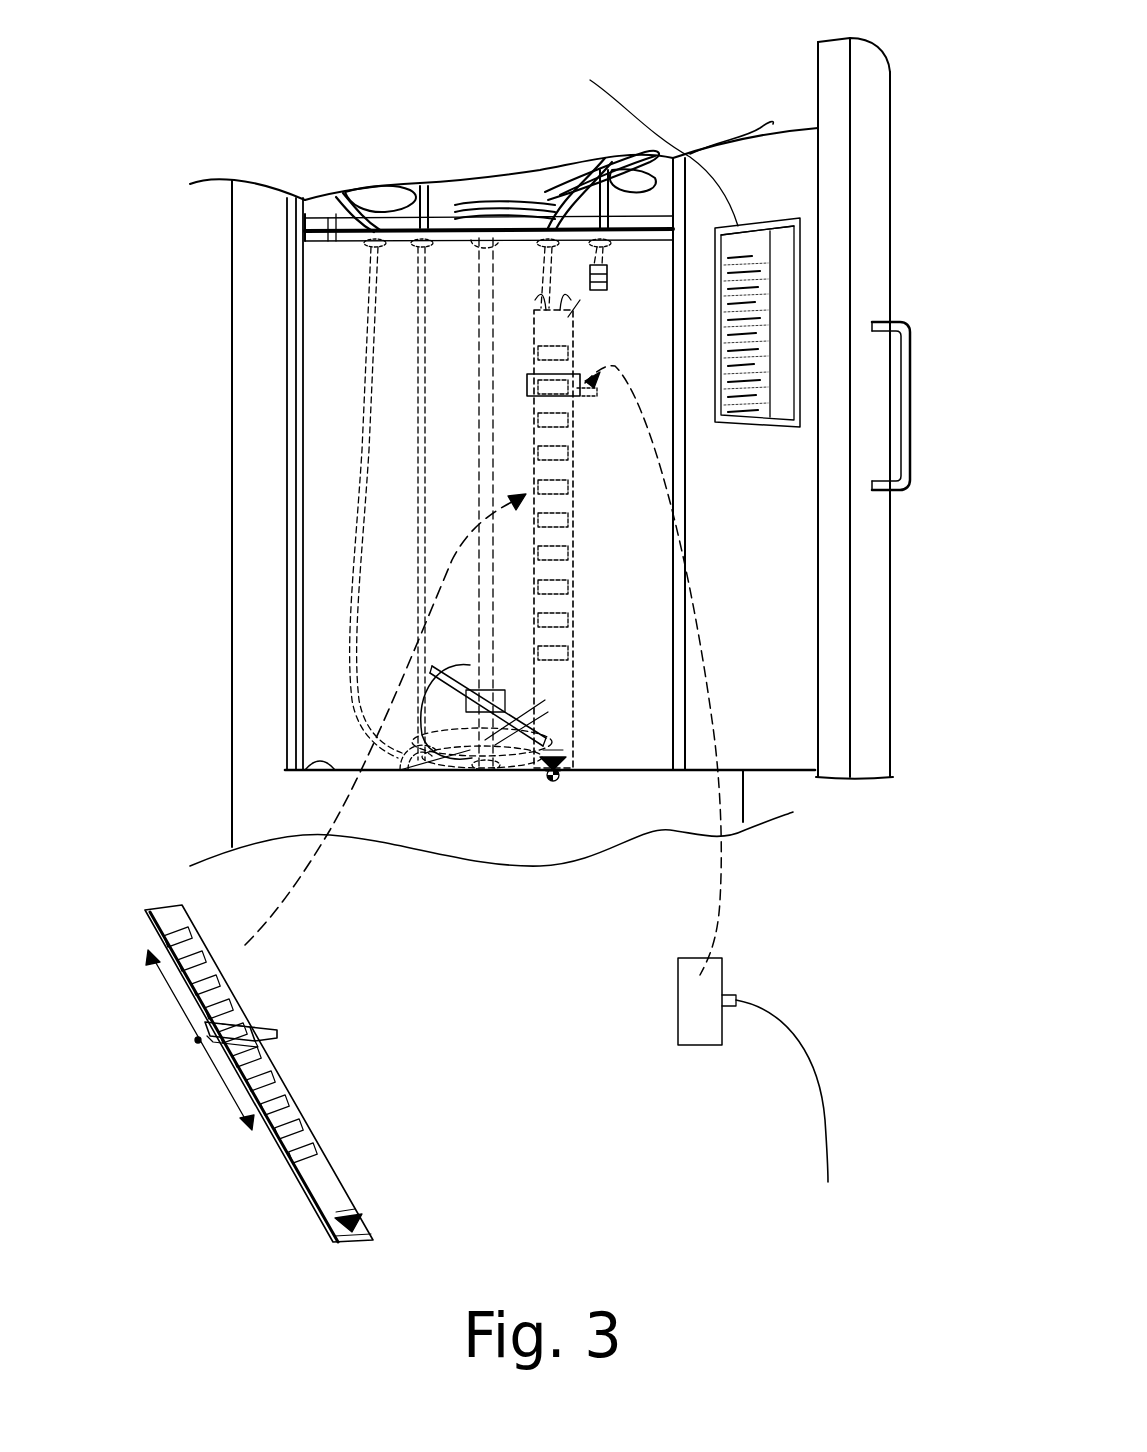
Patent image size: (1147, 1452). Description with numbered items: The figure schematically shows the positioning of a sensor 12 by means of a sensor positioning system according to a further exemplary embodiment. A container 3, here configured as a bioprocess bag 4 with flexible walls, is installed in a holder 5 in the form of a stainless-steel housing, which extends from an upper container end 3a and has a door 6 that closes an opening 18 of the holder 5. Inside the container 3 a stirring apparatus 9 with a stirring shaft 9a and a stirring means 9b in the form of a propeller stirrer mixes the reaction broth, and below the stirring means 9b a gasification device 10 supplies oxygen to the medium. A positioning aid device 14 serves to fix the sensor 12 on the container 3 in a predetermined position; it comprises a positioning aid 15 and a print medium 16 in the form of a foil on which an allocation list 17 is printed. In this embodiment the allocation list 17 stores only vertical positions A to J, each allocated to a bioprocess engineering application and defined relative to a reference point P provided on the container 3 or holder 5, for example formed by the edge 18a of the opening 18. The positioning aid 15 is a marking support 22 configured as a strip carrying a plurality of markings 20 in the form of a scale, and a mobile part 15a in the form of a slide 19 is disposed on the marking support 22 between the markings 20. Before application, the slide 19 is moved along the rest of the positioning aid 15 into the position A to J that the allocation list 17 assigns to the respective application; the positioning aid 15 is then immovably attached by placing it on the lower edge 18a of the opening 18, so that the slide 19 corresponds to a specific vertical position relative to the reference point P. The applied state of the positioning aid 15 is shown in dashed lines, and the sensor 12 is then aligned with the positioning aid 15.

The container 3 is at (333, 352).
The upper container end 3a is at (318, 215).
The bioprocess bag 4 is at (406, 251).
The holder 5 is at (252, 325).
The door 6 is at (876, 600).
The stirring apparatus 9 is at (354, 504).
The stirring shaft 9a is at (478, 492).
The stirring means 9b is at (443, 695).
The gasification device 10 is at (402, 773).
The sensor 12 is at (718, 986).
The positioning aid device 14 is at (580, 300).
The positioning aid 15 is at (546, 306).
The mobile part 15a is at (323, 995).
The print medium 16 is at (773, 226).
The allocation list 17 is at (795, 288).
The opening 18 is at (318, 410).
The edge 18a is at (328, 768).
The slide 19 is at (260, 1028).
The markings 20 is at (200, 1098).
The marking support 22 is at (357, 1107).
The reference point P is at (553, 780).